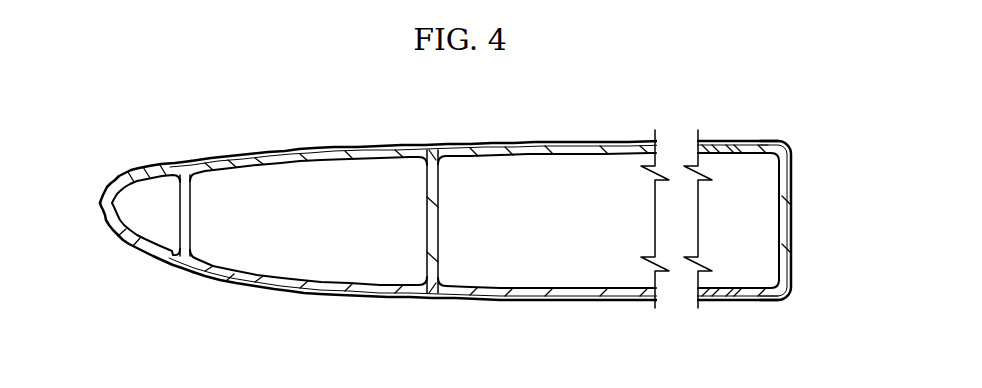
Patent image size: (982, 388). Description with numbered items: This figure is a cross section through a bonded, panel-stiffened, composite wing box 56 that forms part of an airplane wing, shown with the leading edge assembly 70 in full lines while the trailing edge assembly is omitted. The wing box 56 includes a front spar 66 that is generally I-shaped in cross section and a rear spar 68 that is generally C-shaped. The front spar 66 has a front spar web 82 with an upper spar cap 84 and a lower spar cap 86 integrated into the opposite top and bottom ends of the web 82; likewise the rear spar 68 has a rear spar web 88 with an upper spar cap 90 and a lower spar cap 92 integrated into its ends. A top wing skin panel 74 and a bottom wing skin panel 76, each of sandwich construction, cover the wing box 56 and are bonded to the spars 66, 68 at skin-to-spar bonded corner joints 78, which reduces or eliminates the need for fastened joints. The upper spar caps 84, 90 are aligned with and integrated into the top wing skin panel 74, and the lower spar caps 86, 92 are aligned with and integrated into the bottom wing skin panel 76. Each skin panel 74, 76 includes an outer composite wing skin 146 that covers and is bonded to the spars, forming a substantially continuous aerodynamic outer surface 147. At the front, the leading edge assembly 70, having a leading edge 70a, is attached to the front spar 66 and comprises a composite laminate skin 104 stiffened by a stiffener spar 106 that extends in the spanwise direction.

The wing box 56 is at (615, 94).
The front spar 66 is at (478, 133).
The rear spar 68 is at (791, 129).
The leading edge assembly 70 is at (126, 171).
The leading edge 70a is at (127, 248).
The top wing skin panel 74 is at (570, 142).
The bottom wing skin panel 76 is at (574, 301).
The skin-to-spar bonded corner joint 78 is at (440, 131).
The front spar web 82 is at (426, 220).
The upper spar cap 84 is at (400, 152).
The lower spar cap 86 is at (398, 297).
The rear spar web 88 is at (792, 220).
The upper spar cap 90 is at (752, 139).
The lower spar cap 92 is at (753, 300).
The composite laminate skin 104 is at (318, 146).
The stiffener spar 106 is at (191, 217).
The outer composite wing skin 146 is at (530, 137).
The aerodynamic outer surface 147 is at (634, 138).